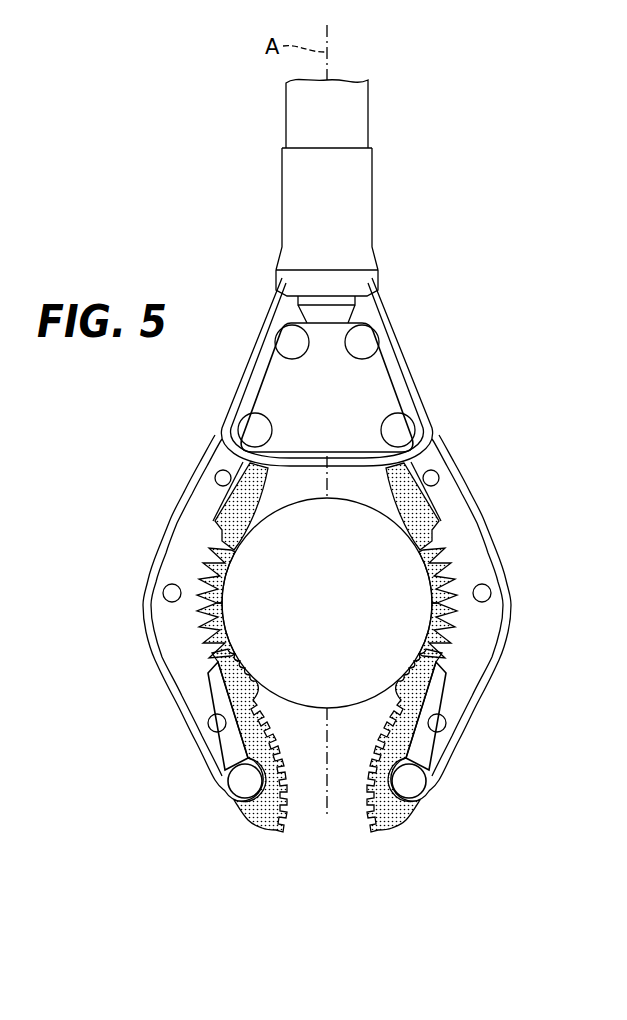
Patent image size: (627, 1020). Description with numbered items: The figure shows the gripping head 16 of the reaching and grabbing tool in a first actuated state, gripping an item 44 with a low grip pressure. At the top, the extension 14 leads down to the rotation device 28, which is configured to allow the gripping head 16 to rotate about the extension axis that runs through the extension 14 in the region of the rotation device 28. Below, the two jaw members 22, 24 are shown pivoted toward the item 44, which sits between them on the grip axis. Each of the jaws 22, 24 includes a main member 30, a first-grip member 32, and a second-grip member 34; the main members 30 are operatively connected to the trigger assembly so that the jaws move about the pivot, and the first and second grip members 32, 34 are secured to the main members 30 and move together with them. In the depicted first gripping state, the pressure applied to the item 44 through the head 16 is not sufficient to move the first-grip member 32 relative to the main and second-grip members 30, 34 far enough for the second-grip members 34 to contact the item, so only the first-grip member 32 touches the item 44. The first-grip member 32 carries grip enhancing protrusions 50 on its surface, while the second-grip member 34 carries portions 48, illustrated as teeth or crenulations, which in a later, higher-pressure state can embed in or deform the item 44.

The extension 14 is at (285, 113).
The rotation device 28 is at (282, 210).
The gripping head 16 is at (328, 633).
The jaw member 22 is at (140, 561).
The jaw member 24 is at (516, 567).
The main member 30 is at (174, 517).
The first-grip member 32 is at (236, 503).
The second-grip member 34 is at (186, 644).
The item 44 is at (337, 614).
The portions 48 is at (225, 635).
The grip enhancing protrusions 50 is at (226, 577).